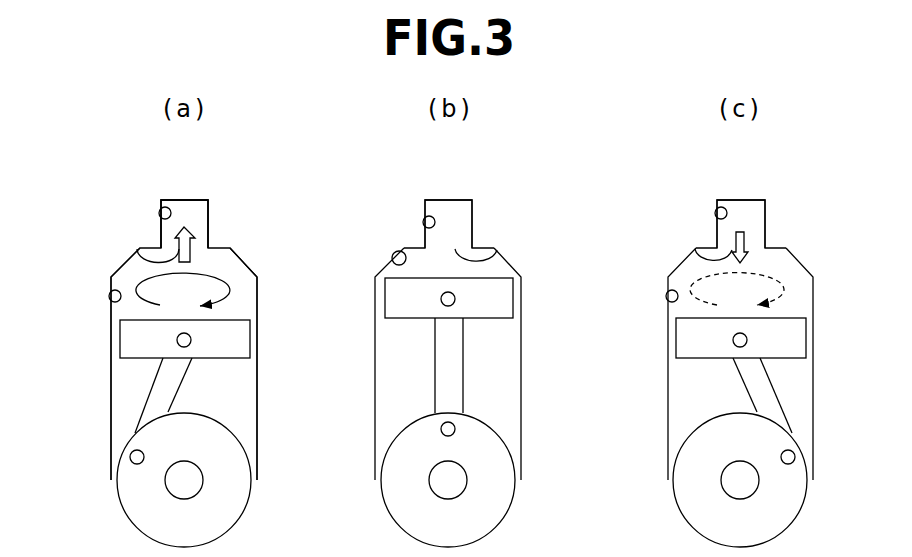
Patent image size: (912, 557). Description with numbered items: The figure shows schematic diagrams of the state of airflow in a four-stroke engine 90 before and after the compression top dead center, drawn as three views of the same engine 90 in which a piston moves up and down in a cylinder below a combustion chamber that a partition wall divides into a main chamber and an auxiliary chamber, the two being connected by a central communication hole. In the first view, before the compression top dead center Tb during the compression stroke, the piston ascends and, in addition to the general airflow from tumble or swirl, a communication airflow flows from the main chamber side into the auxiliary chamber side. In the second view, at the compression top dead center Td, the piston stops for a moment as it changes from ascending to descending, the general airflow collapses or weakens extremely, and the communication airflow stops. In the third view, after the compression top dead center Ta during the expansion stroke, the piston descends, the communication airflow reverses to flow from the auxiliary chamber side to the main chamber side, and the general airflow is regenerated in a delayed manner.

The engine 90 is at (81, 227).
The after the compression top dead center Ta is at (780, 208).
The before the compression top dead center Tb is at (222, 210).
The compression top dead center Td is at (497, 220).